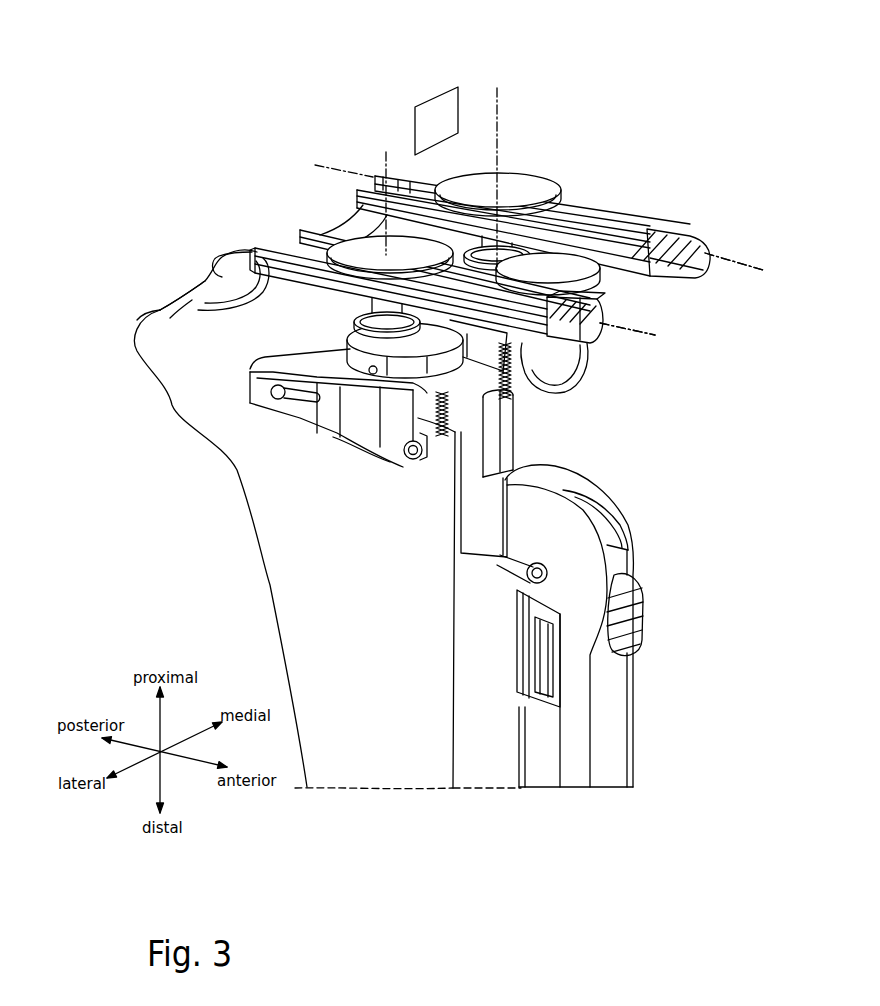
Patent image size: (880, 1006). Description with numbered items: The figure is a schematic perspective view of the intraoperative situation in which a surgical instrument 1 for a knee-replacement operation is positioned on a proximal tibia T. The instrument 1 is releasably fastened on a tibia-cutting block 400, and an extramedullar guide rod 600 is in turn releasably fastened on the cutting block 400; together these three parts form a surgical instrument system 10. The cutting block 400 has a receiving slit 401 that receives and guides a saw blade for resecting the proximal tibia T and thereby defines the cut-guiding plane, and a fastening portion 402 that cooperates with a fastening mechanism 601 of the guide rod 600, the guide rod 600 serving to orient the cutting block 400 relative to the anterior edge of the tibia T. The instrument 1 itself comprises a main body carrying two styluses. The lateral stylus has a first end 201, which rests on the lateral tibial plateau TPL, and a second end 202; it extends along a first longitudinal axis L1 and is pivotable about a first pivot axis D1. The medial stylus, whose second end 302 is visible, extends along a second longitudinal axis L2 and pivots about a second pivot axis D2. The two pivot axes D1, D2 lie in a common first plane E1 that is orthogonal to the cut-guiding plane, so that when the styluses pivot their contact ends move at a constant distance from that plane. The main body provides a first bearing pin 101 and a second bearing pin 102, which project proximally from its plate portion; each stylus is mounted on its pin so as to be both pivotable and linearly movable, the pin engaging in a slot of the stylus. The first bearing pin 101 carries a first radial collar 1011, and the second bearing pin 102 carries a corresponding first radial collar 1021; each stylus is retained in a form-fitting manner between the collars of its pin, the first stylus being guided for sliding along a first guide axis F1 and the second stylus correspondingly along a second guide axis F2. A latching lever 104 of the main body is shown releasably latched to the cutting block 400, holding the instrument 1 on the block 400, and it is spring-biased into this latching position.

The surgical instrument 1 is at (441, 398).
The surgical instrument system 10 is at (441, 453).
The first bearing pin 101 is at (434, 280).
The first radial collar 1011 is at (262, 243).
The second bearing pin 102 is at (545, 227).
The first radial collar 1021 is at (562, 200).
The latching lever 104 is at (510, 396).
The first end 201 is at (160, 310).
The second end 202 is at (603, 313).
The second end 302 is at (698, 262).
The tibia-cutting block 400 is at (310, 412).
The receiving slit 401 is at (513, 423).
The fastening portion 402 is at (487, 528).
The extramedullar guide rod 600 is at (594, 626).
The fastening mechanism 601 is at (537, 657).
The proximal tibia T is at (267, 537).
The lateral tibial plateau TPL is at (192, 323).
The first plane E1 is at (436, 121).
The first pivot axis D1 is at (387, 155).
The second pivot axis D2 is at (498, 103).
The first longitudinal axis L1 is at (641, 338).
The first guide axis F1 is at (627, 329).
The second longitudinal axis L2 is at (747, 265).
The force F2 is at (734, 261).